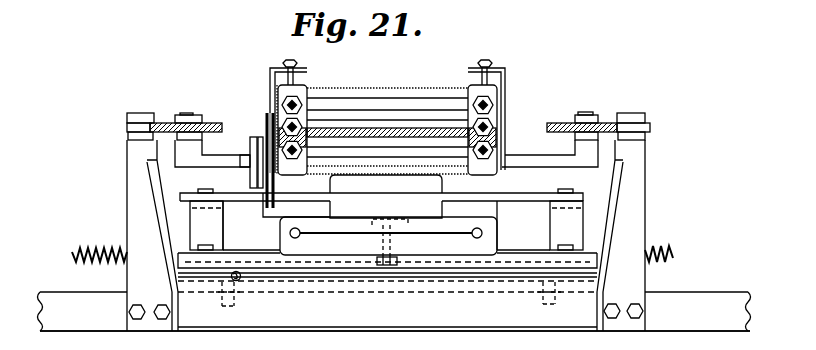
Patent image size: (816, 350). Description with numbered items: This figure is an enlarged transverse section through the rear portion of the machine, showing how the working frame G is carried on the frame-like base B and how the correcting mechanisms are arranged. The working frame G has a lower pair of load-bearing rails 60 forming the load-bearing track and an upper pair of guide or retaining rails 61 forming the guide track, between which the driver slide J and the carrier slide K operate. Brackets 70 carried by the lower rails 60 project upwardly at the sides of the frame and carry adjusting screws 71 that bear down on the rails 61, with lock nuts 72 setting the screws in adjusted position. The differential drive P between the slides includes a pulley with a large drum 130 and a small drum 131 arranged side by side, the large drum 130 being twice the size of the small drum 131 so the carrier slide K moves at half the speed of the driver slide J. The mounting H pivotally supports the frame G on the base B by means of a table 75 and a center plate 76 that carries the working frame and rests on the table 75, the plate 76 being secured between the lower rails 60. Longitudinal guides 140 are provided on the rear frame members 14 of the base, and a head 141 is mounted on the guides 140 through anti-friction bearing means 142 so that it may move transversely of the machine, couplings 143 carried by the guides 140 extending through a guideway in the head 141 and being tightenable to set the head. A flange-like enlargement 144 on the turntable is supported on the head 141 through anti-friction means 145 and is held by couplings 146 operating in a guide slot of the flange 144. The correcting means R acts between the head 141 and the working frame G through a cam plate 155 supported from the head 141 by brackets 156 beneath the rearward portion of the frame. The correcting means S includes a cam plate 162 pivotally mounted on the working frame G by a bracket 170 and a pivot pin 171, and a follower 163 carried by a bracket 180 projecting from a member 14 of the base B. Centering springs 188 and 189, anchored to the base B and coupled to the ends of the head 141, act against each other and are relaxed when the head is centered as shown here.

The rear frame member 14 is at (219, 330).
The load-bearing rail 60 is at (489, 176).
The guide or retaining rail 61 is at (478, 83).
The bracket 70 is at (270, 68).
The adjusting screw 71 is at (297, 84).
The lock nut 72 is at (492, 66).
The table 75 is at (352, 205).
The center plate 76 is at (386, 184).
The large drum 130 is at (262, 120).
The small drum 131 is at (249, 148).
The longitudinal guide 140 is at (387, 284).
The head 141 is at (387, 261).
The anti-friction bearing means 142 is at (233, 280).
The coupling or tie 143 is at (250, 302).
The flange-like enlargement 144 is at (388, 236).
The anti-friction means 145 is at (484, 230).
The tie or coupling 146 is at (382, 246).
The cam 155 is at (588, 193).
The bracket 156 is at (214, 226).
The cam plate 162 is at (160, 122).
The follower 163 is at (133, 118).
The bracket 170 is at (230, 166).
The pivot pin 171 is at (187, 113).
The bracket 180 is at (133, 226).
The centering spring 188 is at (72, 252).
The centering spring 189 is at (660, 249).
The frame-like base B is at (737, 286).
The working frame G is at (394, 81).
The mounting means H is at (442, 188).
The driver slide J is at (353, 118).
The carrier slide K is at (410, 129).
The differential drive P is at (265, 114).
The correcting means R is at (190, 193).
The correcting means S is at (640, 112).